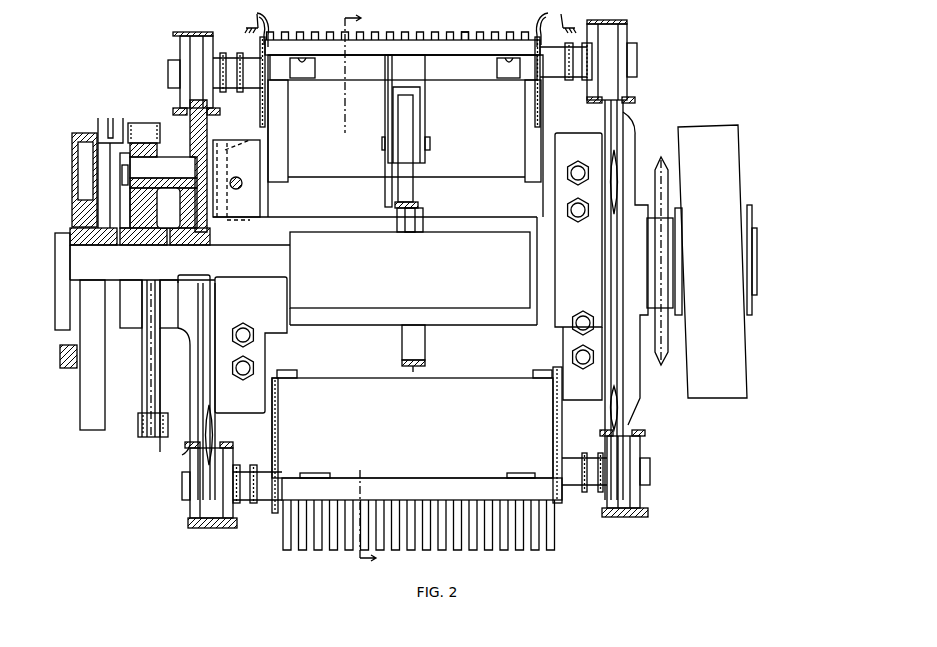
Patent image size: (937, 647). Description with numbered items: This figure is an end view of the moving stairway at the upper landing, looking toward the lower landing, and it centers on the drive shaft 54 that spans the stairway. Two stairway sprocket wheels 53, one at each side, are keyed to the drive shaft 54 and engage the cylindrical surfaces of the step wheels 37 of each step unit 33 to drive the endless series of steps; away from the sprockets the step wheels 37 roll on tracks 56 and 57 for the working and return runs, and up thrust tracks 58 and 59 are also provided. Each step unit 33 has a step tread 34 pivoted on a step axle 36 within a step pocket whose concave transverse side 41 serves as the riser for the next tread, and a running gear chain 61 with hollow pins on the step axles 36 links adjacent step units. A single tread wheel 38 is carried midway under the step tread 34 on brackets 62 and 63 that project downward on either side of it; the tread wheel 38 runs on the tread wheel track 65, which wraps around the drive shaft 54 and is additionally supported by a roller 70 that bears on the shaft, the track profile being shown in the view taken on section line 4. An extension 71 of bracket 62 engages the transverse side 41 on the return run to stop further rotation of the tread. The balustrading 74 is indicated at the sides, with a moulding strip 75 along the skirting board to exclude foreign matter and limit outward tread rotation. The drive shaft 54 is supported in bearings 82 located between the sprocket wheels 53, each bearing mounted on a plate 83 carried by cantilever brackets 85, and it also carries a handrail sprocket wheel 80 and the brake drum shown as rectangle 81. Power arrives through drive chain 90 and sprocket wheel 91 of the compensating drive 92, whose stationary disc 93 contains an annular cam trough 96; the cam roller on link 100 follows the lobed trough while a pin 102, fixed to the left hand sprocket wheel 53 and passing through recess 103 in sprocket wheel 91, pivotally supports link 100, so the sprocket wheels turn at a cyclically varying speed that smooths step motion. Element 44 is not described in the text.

The section line 4- 4 is at (366, 293).
The step unit 33 is at (410, 32).
The step tread 34 is at (458, 32).
The step axle 36 is at (403, 80).
The step wheel 37 is at (180, 52).
The tread wheel 38 is at (413, 188).
The transverse side 41 is at (345, 178).
The bearing block 44 is at (283, 182).
The stairway sprocket wheel 53 is at (208, 120).
The drive shaft 54 is at (172, 341).
The track 56 is at (175, 110).
The track 57 is at (212, 528).
The up thrust track 58 is at (178, 32).
The up thrust track 59 is at (185, 445).
The running gear chain 61 is at (232, 92).
The bracket 62 is at (385, 118).
The bracket 63 is at (425, 105).
The tread wheel track 65 is at (418, 205).
The roller 70 is at (413, 271).
The extension 71 is at (392, 205).
The balustrading 74 is at (248, 26).
The moulding strip 75 is at (270, 22).
The handrail sprocket wheel 80 is at (660, 157).
The stairway brake drum 81 is at (722, 127).
The bearing 82 is at (408, 273).
The plate 83 is at (257, 140).
The cantilever bracket 85 is at (237, 177).
The drive chain 90 is at (140, 440).
The sprocket wheel 91 is at (142, 390).
The compensating drive 92 is at (72, 114).
The disc 93 is at (72, 140).
The annular cam trough 96 is at (82, 170).
The link 100 is at (110, 208).
The pin 102 is at (162, 155).
The recess 103 is at (163, 208).